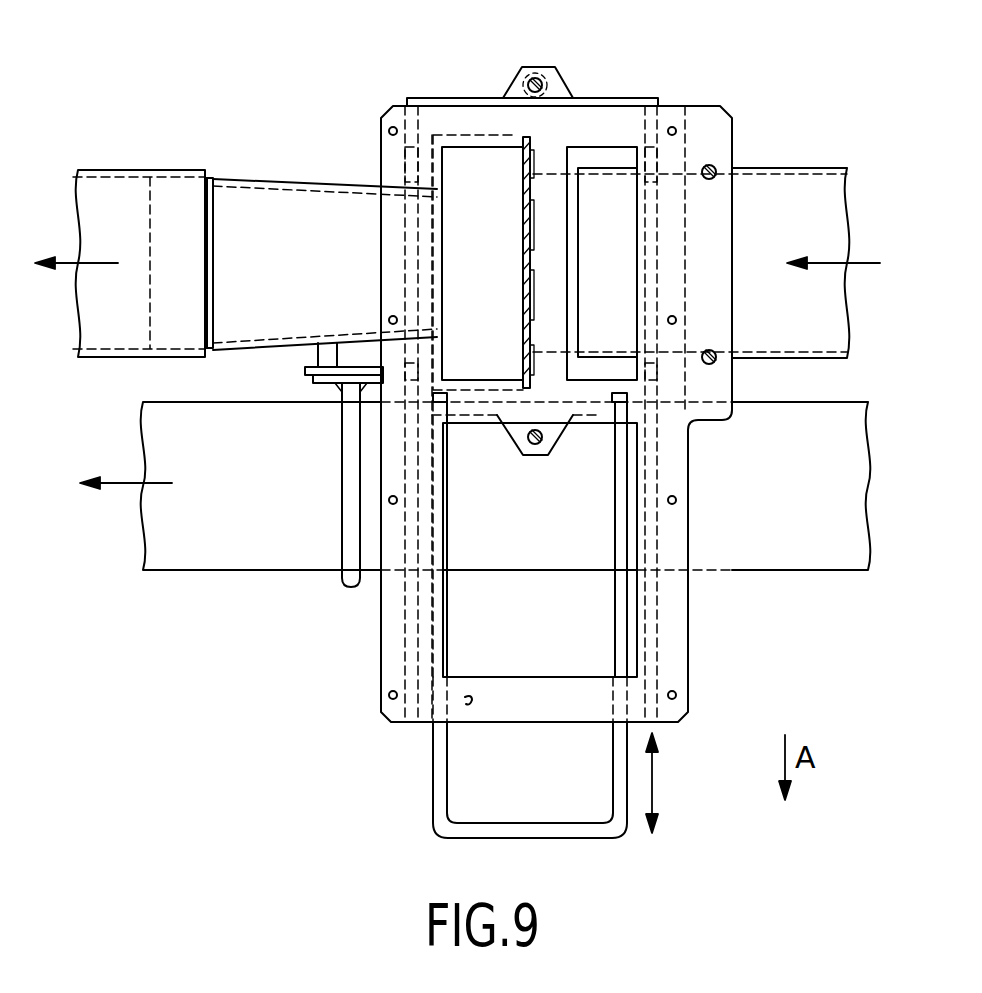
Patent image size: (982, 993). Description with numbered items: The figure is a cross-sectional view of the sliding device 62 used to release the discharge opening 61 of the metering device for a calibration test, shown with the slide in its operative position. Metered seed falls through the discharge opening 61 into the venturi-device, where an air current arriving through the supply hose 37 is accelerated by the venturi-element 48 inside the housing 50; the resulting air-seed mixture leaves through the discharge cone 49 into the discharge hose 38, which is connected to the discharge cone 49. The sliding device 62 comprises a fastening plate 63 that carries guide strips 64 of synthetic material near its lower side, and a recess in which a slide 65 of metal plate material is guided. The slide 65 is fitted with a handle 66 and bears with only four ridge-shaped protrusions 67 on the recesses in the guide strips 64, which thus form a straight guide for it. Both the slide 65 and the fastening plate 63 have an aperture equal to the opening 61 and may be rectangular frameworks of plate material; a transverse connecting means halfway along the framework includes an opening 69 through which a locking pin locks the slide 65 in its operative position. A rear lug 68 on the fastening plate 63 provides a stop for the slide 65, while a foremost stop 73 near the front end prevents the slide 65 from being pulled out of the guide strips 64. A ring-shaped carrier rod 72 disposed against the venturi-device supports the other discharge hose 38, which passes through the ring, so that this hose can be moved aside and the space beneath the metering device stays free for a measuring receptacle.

The supply hose 37 is at (825, 190).
The discharge hose 38 is at (110, 187).
The venturi-element 48 is at (552, 303).
The discharge cone 49 is at (308, 202).
The housing 50 is at (508, 222).
The discharge opening 61 is at (478, 163).
The sliding device 62 is at (714, 603).
The fastening plate 63 is at (582, 708).
The guide strips 64 is at (392, 650).
The slide 65 is at (630, 98).
The handle 66 is at (438, 807).
The ridge-shaped protrusions 67 is at (397, 110).
The rear lug 68 is at (548, 80).
The opening 69 is at (523, 455).
The carrier rod 72 is at (348, 493).
The foremost stop 73 is at (470, 705).